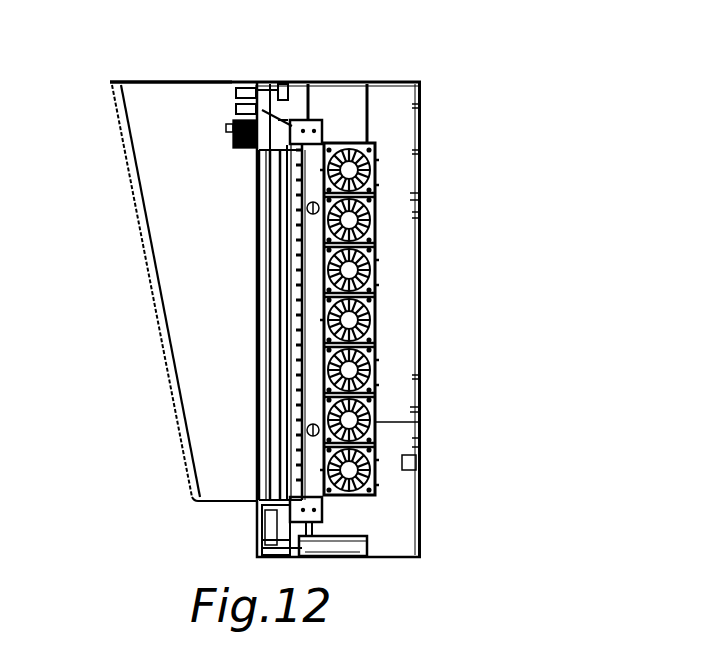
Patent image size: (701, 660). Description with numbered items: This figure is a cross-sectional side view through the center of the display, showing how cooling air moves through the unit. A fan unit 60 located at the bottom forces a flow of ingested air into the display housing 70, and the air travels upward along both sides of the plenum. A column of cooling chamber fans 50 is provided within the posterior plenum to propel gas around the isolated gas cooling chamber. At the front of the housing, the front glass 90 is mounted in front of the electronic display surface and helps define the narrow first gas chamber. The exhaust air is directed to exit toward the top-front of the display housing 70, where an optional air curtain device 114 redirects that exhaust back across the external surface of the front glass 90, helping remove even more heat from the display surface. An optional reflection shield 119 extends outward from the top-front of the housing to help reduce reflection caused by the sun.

The cooling chamber fan 50 is at (370, 357).
The fan unit 60 is at (340, 543).
The display housing 70 is at (421, 115).
The front glass 90 is at (255, 415).
The air curtain device 114 is at (233, 145).
The reflection shield 119 is at (148, 80).